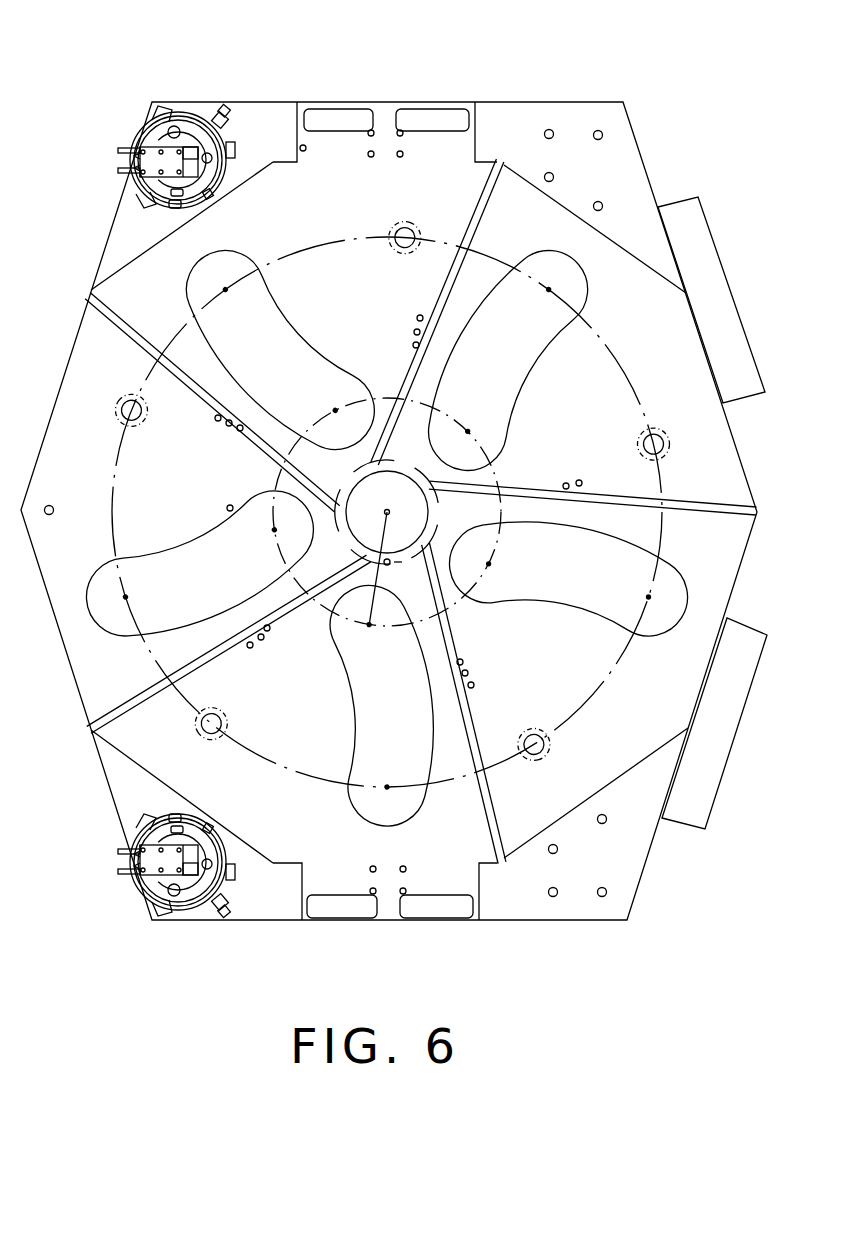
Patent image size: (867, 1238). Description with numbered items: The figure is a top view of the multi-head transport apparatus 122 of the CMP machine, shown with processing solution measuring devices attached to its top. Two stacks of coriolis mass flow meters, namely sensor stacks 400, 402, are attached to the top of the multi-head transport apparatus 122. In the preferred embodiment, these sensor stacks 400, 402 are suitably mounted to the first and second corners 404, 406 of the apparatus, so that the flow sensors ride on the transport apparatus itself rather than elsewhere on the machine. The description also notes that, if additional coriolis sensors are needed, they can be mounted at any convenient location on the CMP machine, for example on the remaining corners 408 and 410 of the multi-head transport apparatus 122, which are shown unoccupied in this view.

The multi-head transport apparatus 122 is at (396, 99).
The sensor stack 400 is at (193, 117).
The sensor stack 402 is at (193, 897).
The first corner 404 is at (128, 222).
The second corner 406 is at (282, 910).
The corner 408 is at (630, 866).
The corner 410 is at (622, 163).